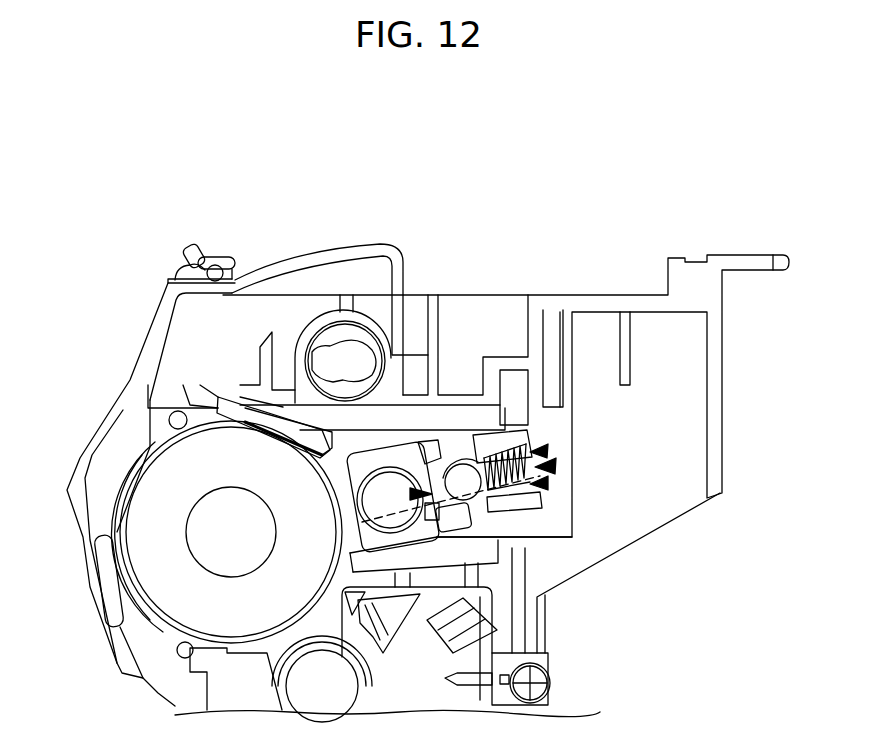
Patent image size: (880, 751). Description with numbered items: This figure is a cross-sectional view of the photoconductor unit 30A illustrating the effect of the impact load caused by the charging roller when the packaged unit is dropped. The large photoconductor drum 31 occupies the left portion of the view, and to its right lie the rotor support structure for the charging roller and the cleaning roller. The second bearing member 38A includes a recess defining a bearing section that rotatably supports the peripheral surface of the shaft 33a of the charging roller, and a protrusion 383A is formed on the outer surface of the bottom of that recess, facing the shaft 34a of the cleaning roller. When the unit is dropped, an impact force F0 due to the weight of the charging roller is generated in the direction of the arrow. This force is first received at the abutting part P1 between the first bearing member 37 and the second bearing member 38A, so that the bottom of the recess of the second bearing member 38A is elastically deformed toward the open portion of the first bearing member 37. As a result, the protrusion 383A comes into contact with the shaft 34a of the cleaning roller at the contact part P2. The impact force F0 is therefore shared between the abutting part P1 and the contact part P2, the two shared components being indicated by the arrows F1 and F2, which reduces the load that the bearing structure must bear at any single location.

The photoconductor unit 30A is at (167, 263).
The photoconductor drum 31 is at (183, 466).
The shaft of the charging roller 33a is at (362, 522).
The shaft of the cleaning roller 34a is at (525, 543).
The first bearing member 37 is at (507, 510).
The second bearing member 38A is at (353, 470).
The protrusion 383A is at (439, 453).
The impact force F0 is at (358, 535).
The shared impact force component F1 is at (537, 448).
The shared impact force component F2 is at (552, 463).
The abutting part P1 is at (393, 452).
The contact part P2 is at (440, 485).